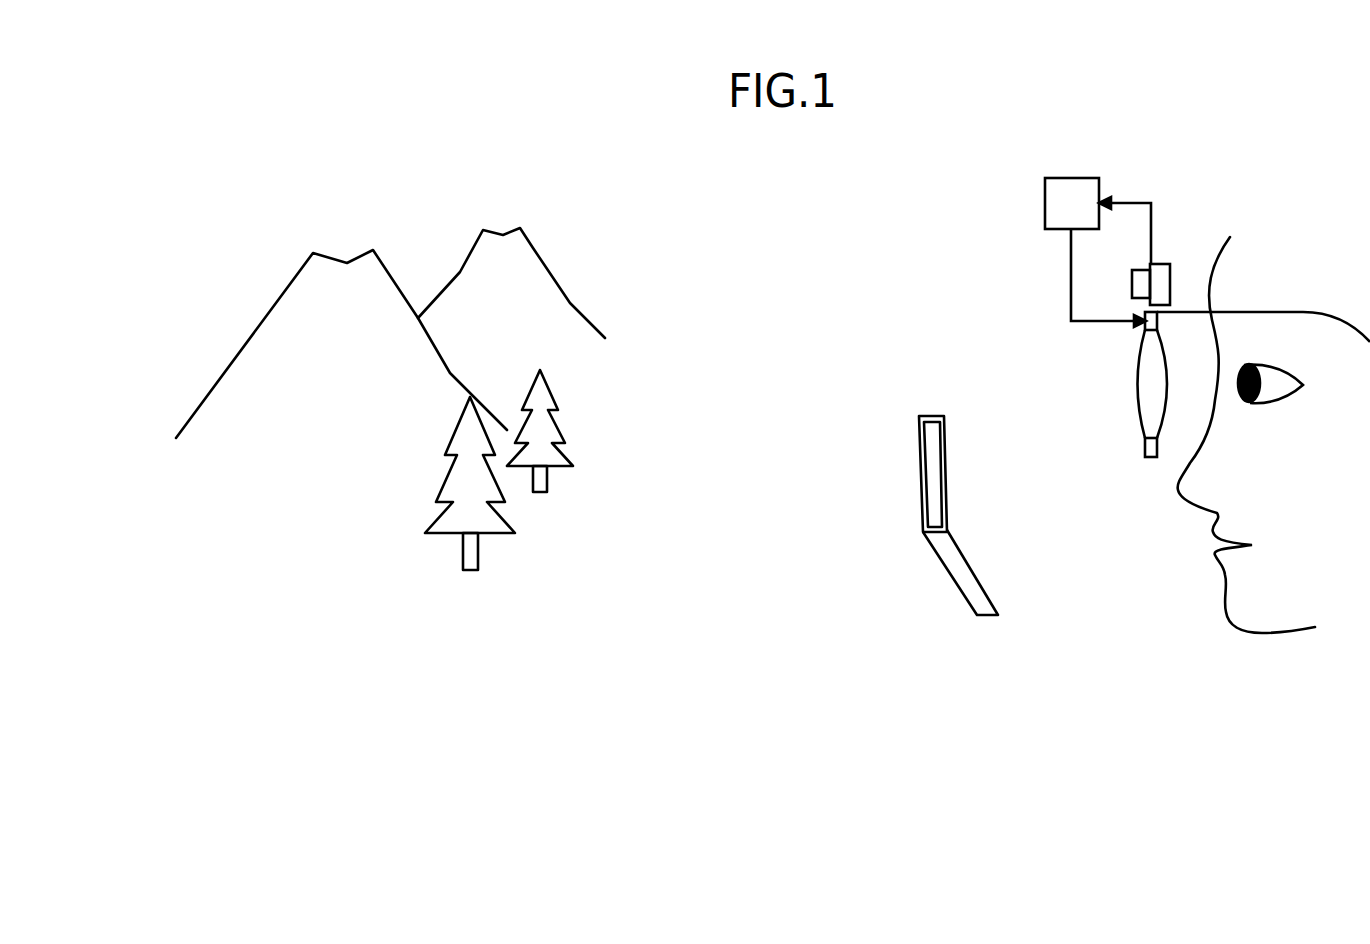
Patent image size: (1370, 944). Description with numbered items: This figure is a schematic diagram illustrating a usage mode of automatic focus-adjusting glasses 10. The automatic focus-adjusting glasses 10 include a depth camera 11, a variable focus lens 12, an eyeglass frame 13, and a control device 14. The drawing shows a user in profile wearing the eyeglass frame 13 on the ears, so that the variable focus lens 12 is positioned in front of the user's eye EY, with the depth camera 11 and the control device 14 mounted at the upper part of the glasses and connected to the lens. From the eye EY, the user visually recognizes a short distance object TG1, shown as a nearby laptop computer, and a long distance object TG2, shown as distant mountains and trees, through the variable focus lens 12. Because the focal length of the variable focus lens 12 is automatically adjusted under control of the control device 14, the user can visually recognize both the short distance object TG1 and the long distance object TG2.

The automatic focus-adjusting glasses 10 is at (1085, 364).
The depth camera 11 is at (1160, 264).
The variable focus lens 12 is at (1137, 393).
The eyeglass frame 13 is at (1295, 310).
The control device 14 is at (1075, 178).
The short distance object TG1 is at (947, 568).
The long distance object TG2 is at (377, 483).
The eye EY is at (1250, 405).